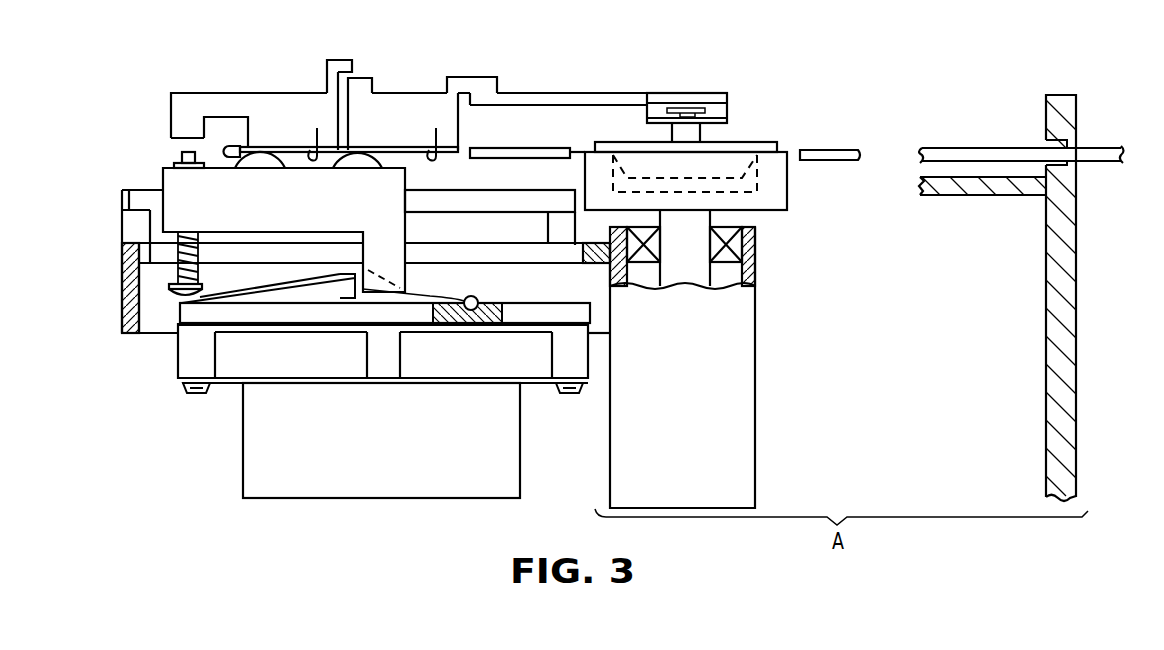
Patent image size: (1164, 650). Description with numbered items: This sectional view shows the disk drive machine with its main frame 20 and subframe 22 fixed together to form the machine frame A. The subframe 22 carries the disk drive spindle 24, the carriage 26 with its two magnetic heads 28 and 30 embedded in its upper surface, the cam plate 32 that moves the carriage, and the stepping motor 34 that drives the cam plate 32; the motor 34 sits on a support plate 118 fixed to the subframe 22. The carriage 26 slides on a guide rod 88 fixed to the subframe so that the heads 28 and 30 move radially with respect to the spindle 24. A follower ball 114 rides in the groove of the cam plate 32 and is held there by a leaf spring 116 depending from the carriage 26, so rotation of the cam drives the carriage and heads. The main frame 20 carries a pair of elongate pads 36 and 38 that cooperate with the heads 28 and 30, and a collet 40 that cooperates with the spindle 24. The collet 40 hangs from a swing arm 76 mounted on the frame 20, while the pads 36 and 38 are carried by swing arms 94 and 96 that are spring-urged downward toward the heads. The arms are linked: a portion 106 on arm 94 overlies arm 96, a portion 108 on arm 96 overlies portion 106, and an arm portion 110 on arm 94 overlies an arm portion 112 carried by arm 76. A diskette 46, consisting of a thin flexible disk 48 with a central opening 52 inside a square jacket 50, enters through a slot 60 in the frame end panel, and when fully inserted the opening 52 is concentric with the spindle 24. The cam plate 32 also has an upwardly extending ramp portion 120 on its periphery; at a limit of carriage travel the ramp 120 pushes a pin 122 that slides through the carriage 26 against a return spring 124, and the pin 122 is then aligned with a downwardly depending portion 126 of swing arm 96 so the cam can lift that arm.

The main frame 20 is at (1060, 95).
The subframe 22 is at (697, 427).
The disk drive spindle 24 is at (787, 188).
The carriage 26 is at (324, 211).
The magnetic head 28 is at (362, 170).
The magnetic head 30 is at (262, 170).
The cam plate 32 is at (181, 308).
The motor 34 is at (394, 461).
The elongate pad 36 is at (435, 148).
The elongate pad 38 is at (317, 147).
The collet 40 is at (632, 142).
The diskette 46 is at (943, 147).
The disk 48 is at (796, 150).
The jacket 50 is at (1000, 147).
The central opening 52 is at (750, 175).
The slot 60 is at (1080, 145).
The swing arm 76 is at (688, 93).
The guide rod 88 is at (147, 188).
The swing arm 94 is at (416, 93).
The swing arm 96 is at (252, 93).
The portion 106 is at (362, 77).
The portion 108 is at (336, 60).
The arm portion 110 is at (464, 77).
The arm portion 112 is at (556, 93).
The follower ball 114 is at (471, 316).
The leaf spring 116 is at (472, 296).
The support plate 118 is at (228, 387).
The ramp portion 120 is at (283, 276).
The pin 122 is at (180, 153).
The return spring 124 is at (172, 273).
The depending portion 126 is at (182, 132).